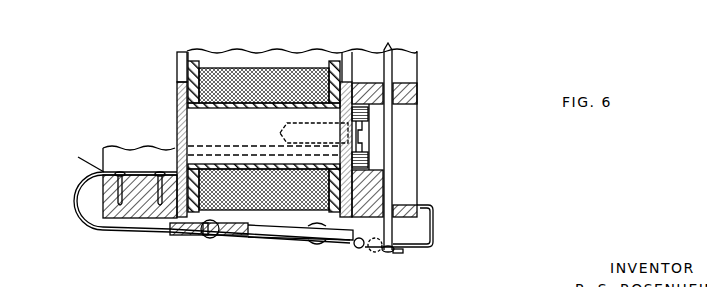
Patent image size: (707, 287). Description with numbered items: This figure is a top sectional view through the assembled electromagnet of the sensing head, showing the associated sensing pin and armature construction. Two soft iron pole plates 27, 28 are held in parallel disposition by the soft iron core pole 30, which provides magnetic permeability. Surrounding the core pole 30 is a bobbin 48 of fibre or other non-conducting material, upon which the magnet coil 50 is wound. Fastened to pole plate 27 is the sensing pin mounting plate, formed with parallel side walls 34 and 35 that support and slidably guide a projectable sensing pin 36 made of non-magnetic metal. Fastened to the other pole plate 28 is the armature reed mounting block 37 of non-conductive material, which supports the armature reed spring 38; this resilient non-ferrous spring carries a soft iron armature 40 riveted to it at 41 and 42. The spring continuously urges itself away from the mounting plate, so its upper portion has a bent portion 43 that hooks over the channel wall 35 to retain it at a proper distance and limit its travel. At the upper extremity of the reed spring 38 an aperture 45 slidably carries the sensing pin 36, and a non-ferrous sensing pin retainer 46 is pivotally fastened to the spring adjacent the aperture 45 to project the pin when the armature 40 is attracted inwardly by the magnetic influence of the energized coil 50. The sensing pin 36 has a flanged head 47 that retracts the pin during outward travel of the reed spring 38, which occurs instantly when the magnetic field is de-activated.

The pole plate 27 is at (360, 45).
The pole plate 28 is at (176, 69).
The core pole 30 is at (200, 128).
The side wall 34 is at (418, 93).
The side wall 35 is at (408, 204).
The sensing pin 36 is at (393, 53).
The armature reed mounting block 37 is at (150, 160).
The armature reed spring 38 is at (123, 233).
The armature 40 is at (187, 232).
The rivet 41 is at (208, 238).
The rivet 42 is at (318, 242).
The bent portion 43 is at (72, 203).
The aperture 45 is at (362, 249).
The sensing pin retainer 46 is at (399, 254).
The flanged head 47 is at (387, 252).
The bobbin 48 is at (191, 63).
The magnet coil 50 is at (283, 67).